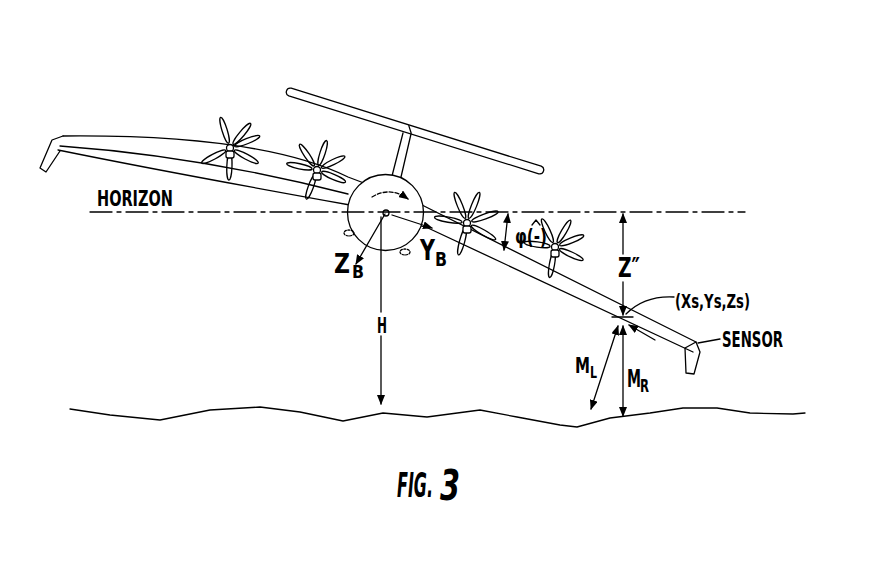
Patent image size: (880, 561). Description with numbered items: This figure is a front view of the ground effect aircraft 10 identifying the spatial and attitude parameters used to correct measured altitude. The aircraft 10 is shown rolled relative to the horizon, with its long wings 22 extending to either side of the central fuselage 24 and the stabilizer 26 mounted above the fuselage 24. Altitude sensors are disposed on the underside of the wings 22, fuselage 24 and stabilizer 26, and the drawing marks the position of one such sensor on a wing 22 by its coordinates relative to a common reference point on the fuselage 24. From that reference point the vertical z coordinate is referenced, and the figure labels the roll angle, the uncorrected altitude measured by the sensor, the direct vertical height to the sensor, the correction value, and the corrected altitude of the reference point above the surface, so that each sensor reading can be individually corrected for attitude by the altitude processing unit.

The aircraft 10 is at (368, 199).
The wings 22 is at (101, 136).
The fuselage 24 is at (394, 257).
The stabilizer 26 is at (316, 92).